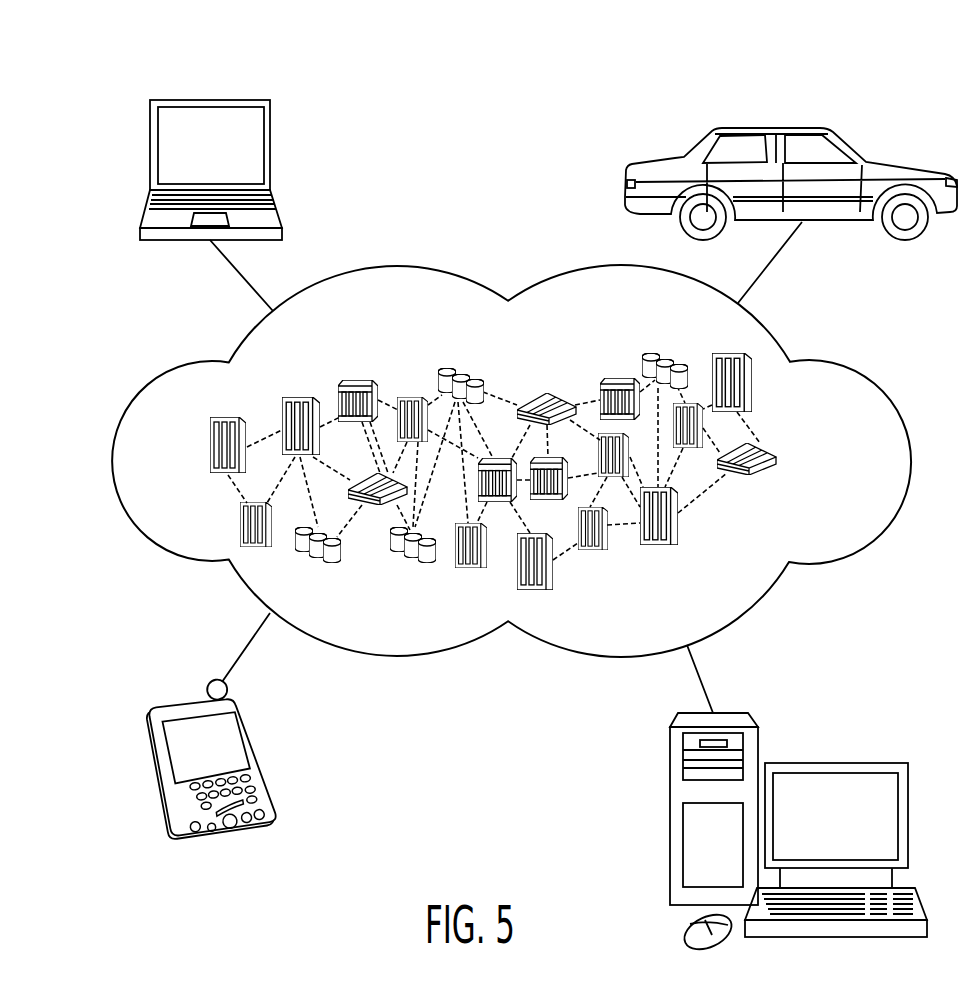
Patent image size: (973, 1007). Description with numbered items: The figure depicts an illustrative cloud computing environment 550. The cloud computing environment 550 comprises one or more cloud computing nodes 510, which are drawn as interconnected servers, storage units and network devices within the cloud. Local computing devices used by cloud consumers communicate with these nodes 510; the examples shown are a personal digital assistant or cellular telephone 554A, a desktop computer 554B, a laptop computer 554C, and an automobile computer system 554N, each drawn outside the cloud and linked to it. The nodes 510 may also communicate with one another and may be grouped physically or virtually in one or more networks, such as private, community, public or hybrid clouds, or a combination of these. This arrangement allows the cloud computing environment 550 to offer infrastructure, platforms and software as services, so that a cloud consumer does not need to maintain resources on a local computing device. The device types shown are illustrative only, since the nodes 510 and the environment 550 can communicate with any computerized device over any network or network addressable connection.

The cloud computing node 510 is at (792, 462).
The cloud computing environment 550 is at (849, 366).
The personal digital assistant (PDA) or cellular telephone 554A is at (192, 698).
The desktop computer 554B is at (833, 762).
The laptop computer 554C is at (210, 98).
The automobile computer system 554N is at (773, 125).